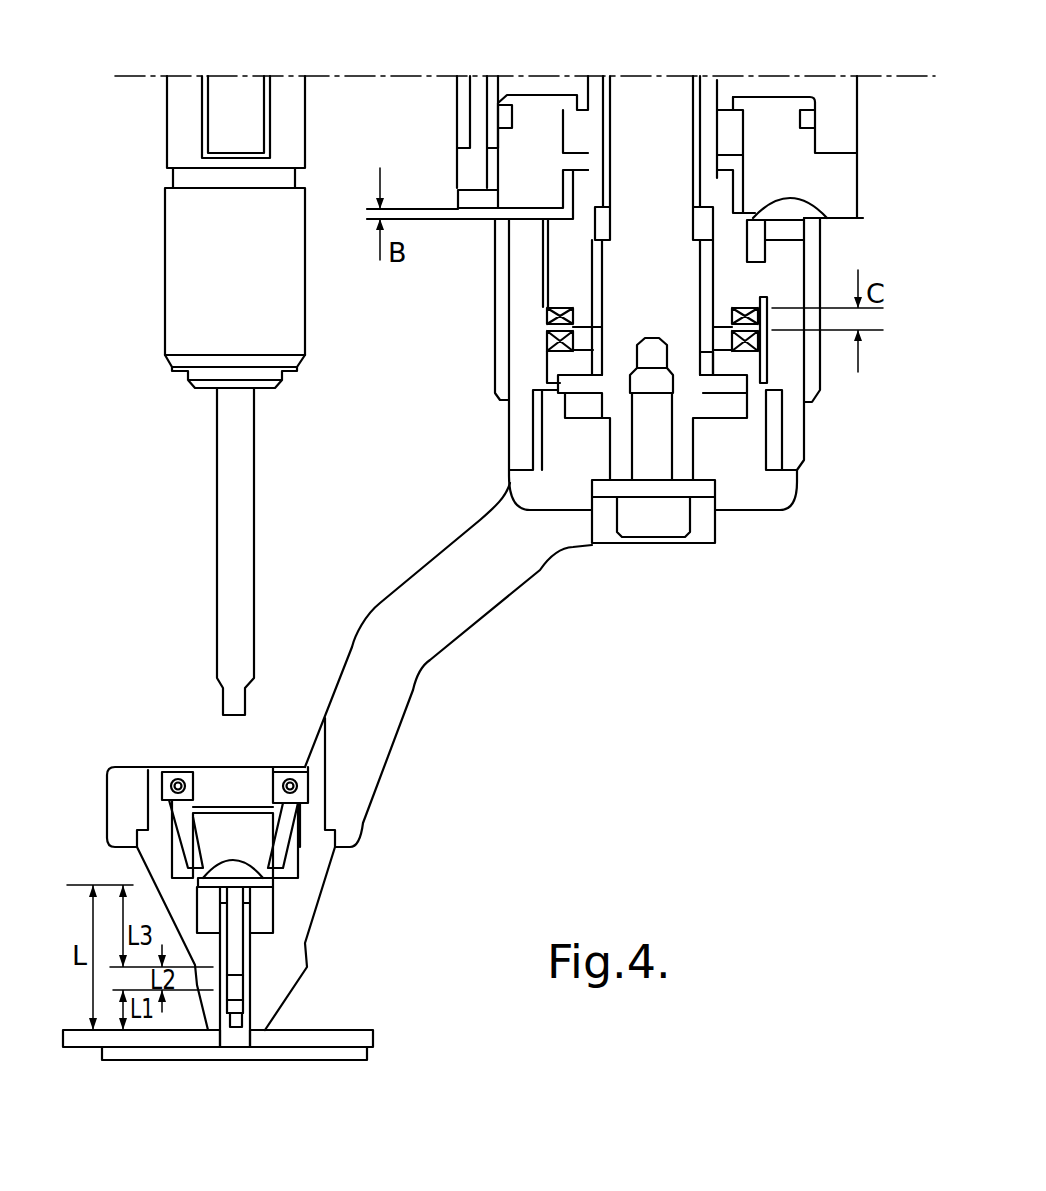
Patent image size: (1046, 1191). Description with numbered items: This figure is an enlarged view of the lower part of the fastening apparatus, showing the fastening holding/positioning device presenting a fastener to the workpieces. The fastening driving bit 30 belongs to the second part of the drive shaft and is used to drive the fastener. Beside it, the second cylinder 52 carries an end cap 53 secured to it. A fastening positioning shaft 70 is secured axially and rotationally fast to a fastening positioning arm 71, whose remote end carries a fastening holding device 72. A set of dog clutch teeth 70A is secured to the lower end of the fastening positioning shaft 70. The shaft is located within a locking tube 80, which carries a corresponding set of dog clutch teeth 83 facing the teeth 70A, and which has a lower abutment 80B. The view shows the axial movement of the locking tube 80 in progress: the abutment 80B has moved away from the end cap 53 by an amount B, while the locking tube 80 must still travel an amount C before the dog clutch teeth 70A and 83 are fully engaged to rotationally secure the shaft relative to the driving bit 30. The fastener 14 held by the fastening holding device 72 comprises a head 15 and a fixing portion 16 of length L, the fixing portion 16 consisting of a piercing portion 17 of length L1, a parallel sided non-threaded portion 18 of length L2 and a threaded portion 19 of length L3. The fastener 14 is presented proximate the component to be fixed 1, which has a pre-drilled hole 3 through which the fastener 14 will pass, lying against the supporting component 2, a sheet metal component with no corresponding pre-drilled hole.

The component to be fixed 1 is at (375, 1038).
The supporting component 2 is at (340, 1053).
The pre-drilled hole 3 is at (237, 1040).
The fastener 14 is at (233, 952).
The head 15 is at (247, 872).
The fixing portion 16 is at (240, 983).
The piercing portion 17 is at (237, 1017).
The parallel sided non-threaded portion 18 is at (247, 995).
The threaded portion 19 is at (250, 940).
The fastening driving bit 30 is at (225, 545).
The second cylinder 52 is at (835, 125).
The end cap 53 is at (840, 193).
The fastening positioning shaft 70 is at (670, 88).
The dog clutch teeth 70A is at (560, 347).
The fastening positioning arm 71 is at (460, 605).
The fastening holding device 72 is at (388, 913).
The locking tube 80 is at (708, 97).
The lower abutment 80B is at (829, 220).
The dog clutch teeth 83 is at (557, 308).